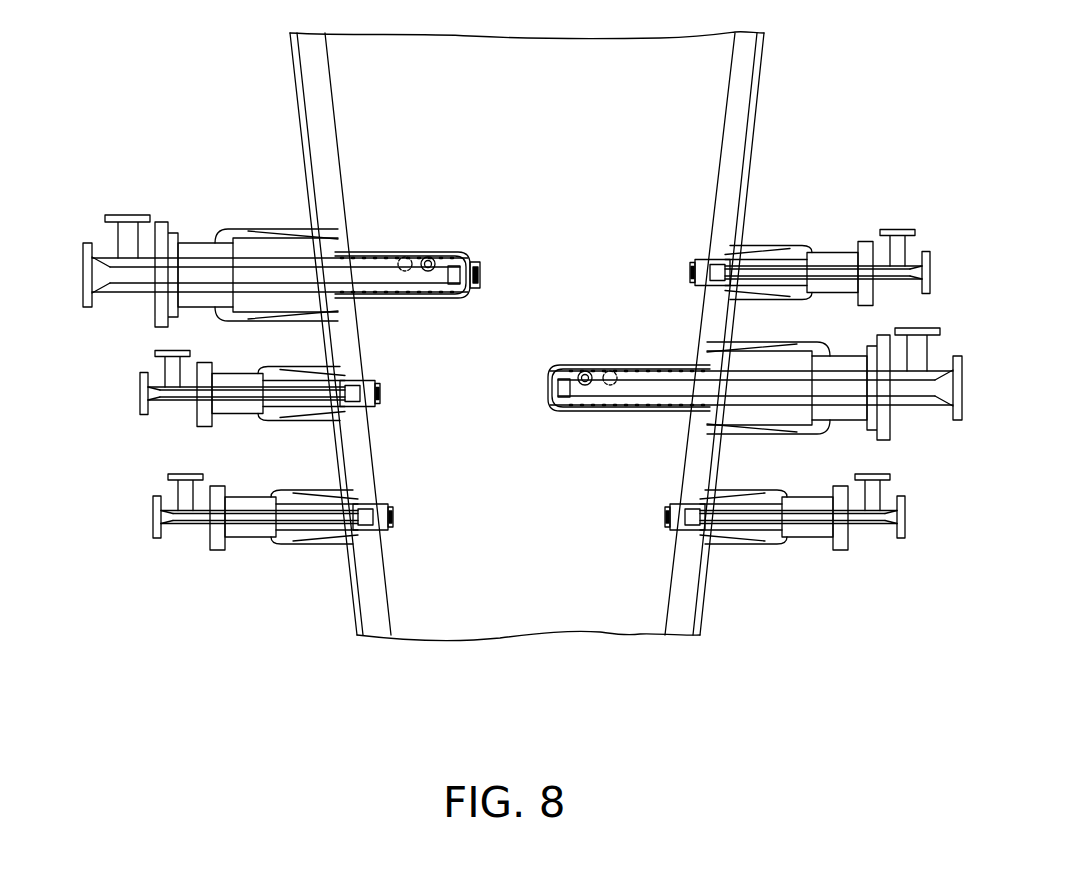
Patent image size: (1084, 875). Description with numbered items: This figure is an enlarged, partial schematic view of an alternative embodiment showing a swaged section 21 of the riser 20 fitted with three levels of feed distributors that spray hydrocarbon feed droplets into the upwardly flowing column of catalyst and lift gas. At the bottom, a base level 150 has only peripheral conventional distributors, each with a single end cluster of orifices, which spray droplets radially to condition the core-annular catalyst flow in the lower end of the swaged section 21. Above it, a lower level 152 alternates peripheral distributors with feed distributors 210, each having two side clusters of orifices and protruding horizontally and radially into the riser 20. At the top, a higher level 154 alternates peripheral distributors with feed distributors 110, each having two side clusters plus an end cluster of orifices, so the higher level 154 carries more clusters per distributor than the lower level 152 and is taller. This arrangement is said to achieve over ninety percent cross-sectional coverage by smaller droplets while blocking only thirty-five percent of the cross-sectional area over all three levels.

The riser 20 is at (762, 70).
The swaged section 21 is at (190, 108).
The feed distributor 110 is at (262, 258).
The base level 150 is at (272, 500).
The lower level 152 is at (262, 376).
The higher level 154 is at (284, 260).
The feed distributor 210 is at (751, 389).